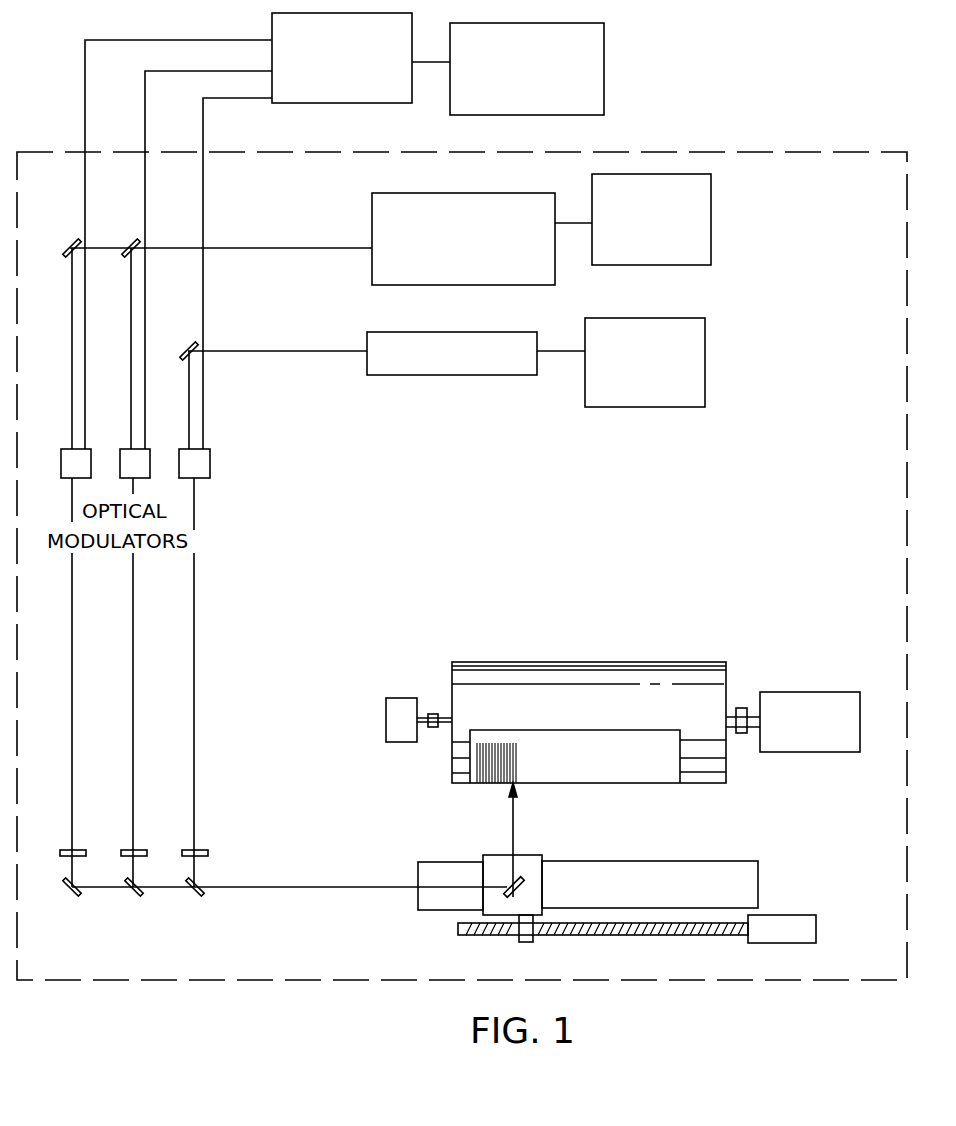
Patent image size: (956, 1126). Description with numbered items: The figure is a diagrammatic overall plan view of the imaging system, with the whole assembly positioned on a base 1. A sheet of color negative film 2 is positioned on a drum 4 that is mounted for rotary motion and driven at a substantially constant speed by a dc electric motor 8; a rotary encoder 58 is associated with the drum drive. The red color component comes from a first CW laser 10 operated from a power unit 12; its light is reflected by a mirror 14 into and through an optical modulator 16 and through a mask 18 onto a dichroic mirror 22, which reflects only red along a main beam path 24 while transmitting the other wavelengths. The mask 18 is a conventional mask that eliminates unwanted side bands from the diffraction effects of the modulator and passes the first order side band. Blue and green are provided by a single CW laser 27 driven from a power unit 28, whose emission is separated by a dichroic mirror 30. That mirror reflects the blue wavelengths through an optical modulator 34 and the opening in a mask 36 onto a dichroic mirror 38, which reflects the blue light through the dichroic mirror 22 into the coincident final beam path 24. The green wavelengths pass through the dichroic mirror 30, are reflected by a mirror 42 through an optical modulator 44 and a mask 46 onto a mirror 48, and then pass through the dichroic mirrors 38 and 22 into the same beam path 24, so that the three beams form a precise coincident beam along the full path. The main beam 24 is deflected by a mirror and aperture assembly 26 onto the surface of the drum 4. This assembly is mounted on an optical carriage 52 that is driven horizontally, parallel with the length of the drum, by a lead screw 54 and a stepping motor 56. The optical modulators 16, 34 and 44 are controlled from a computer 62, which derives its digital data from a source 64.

The base 1 is at (427, 981).
The computer 62 is at (327, 51).
The source 64 is at (583, 54).
The CW laser 27 is at (414, 226).
The power unit 28 is at (632, 202).
The first CW laser 10 is at (399, 364).
The power unit 12 is at (620, 349).
The mirror 14 is at (187, 345).
The mirror 42 is at (68, 243).
The dichroic mirror 30 is at (127, 243).
The optical modulator 44 is at (66, 449).
The optical modulator 34 is at (126, 449).
The optical modulator 16 is at (188, 449).
The mask 46 is at (76, 849).
The mask 36 is at (138, 849).
The mask 18 is at (199, 849).
The mirror 48 is at (75, 898).
The dichroic mirror 38 is at (137, 898).
The dichroic mirror 22 is at (198, 898).
The main beam path 24 is at (319, 888).
The drum 4 is at (632, 662).
The sheet of color negative film 2 is at (492, 743).
The rotary encoder 58 is at (397, 698).
The dc electric motor 8 is at (785, 692).
The mirror and aperture assembly 26 is at (530, 831).
The optical carriage 52 is at (500, 855).
The lead screw 54 is at (645, 935).
The stepping motor 56 is at (790, 915).